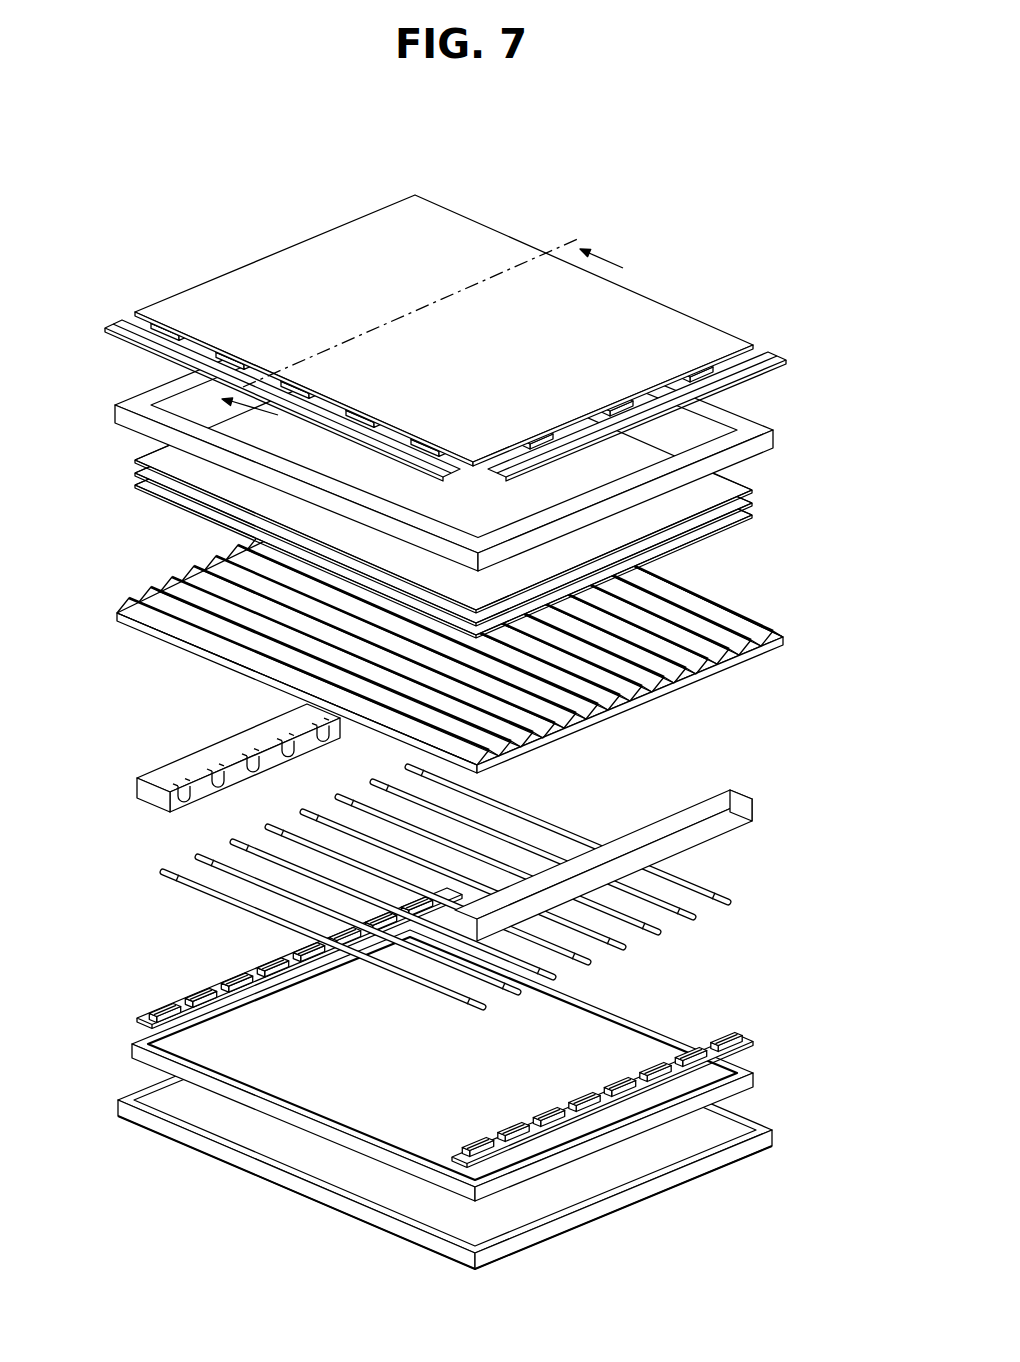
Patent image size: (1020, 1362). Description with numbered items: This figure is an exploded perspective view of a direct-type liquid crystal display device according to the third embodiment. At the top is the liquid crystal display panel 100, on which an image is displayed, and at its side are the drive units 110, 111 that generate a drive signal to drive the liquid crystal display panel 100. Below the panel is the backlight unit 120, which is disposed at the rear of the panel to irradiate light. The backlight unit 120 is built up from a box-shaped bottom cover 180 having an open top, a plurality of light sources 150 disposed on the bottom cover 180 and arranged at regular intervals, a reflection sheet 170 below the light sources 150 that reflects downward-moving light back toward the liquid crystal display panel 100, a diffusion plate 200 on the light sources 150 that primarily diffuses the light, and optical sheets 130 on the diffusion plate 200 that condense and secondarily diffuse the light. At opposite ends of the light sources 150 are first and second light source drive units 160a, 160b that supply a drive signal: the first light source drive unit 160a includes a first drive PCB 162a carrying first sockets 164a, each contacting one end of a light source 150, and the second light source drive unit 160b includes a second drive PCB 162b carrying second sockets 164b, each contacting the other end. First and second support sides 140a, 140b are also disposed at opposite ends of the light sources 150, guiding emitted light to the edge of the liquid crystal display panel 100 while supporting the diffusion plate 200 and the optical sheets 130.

The liquid crystal display panel 100 is at (507, 243).
The drive unit 110 is at (775, 338).
The drive unit 111 is at (122, 322).
The backlight unit 120 is at (856, 1115).
The optical sheets 130 is at (757, 488).
The first support side 140a is at (167, 768).
The second support side 140b is at (755, 818).
The light sources 150 is at (757, 858).
The first light source drive unit 160a is at (651, 1070).
The second light source drive unit 160b is at (242, 958).
The first drive printed circuit board 162a is at (695, 1036).
The second drive printed circuit board 162b is at (290, 959).
The first sockets 164a is at (722, 1031).
The second sockets 164b is at (153, 1008).
The reflection sheet 170 is at (584, 1010).
The bottom cover 180 is at (764, 1105).
The diffusion plate 200 is at (786, 620).